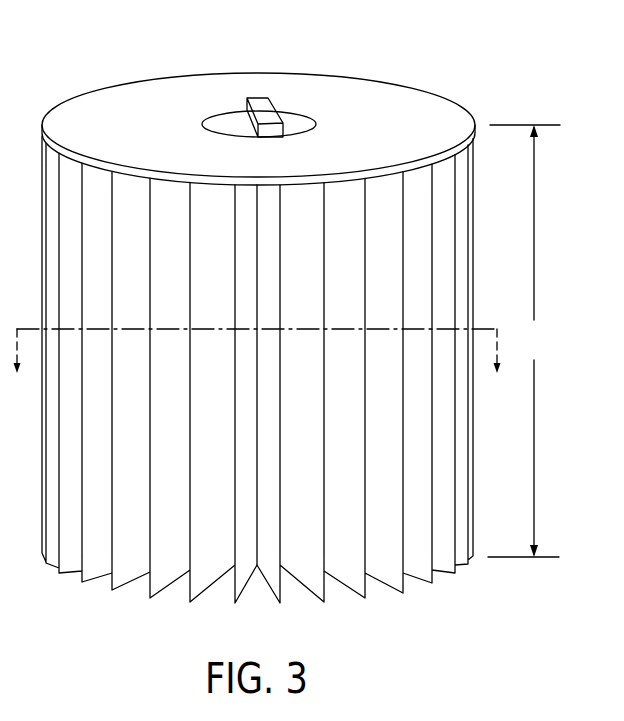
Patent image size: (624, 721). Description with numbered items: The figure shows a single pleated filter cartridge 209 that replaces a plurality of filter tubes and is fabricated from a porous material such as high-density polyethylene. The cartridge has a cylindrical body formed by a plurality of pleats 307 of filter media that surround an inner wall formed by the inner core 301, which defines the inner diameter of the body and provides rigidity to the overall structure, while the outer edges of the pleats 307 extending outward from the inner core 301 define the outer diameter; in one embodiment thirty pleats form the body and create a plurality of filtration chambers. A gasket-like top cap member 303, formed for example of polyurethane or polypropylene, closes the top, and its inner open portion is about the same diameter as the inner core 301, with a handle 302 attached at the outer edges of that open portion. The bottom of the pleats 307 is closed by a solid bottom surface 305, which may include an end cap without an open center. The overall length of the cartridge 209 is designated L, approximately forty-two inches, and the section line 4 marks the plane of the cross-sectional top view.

The single pleated filter cartridge 209 is at (276, 330).
The inner core 301 is at (235, 122).
The handle 302 is at (267, 112).
The top cap member 303 is at (446, 118).
The solid bottom surface 305 is at (418, 582).
The plurality of pleats 307 is at (164, 572).
The overall length L is at (524, 341).
The section line 4- 4 is at (255, 371).